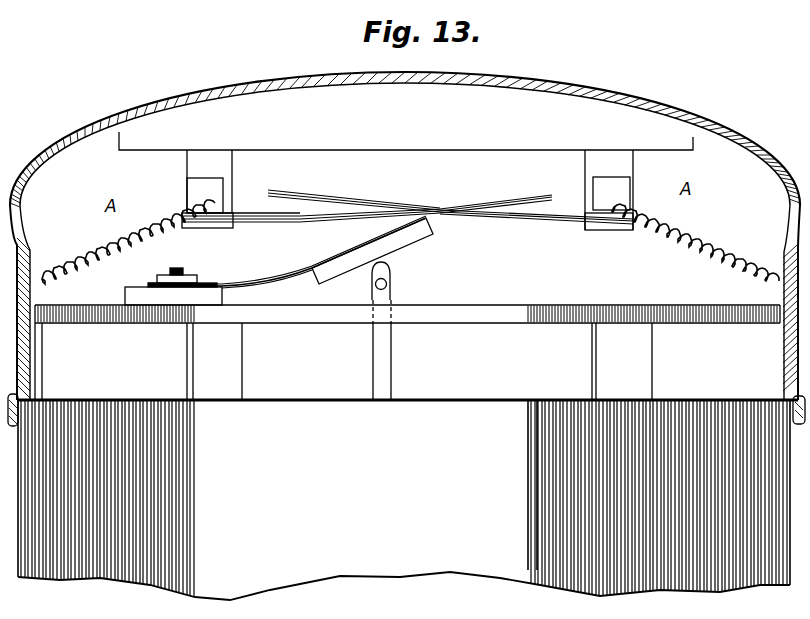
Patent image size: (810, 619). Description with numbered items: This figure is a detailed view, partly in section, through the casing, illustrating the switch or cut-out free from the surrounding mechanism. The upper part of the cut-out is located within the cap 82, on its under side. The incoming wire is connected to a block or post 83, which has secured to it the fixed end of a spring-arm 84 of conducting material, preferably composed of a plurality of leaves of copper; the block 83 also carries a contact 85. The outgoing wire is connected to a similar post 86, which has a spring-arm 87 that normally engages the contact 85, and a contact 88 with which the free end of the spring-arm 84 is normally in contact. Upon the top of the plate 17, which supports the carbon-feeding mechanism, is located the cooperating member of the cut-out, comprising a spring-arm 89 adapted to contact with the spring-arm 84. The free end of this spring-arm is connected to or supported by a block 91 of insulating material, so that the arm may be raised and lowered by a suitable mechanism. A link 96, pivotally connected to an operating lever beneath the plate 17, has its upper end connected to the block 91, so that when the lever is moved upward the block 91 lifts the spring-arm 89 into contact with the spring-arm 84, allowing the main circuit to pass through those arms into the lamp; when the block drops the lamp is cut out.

The cap 82 is at (277, 82).
The post 86 is at (223, 194).
The block or post 83 is at (609, 203).
The contact 88 is at (260, 217).
The spring-arm 84 is at (326, 198).
The contact 85 is at (517, 222).
The spring-arm 87 is at (497, 203).
The block 91 is at (407, 240).
The spring-arm 89 is at (274, 272).
The top plate 17 is at (465, 308).
The link 96 is at (392, 358).